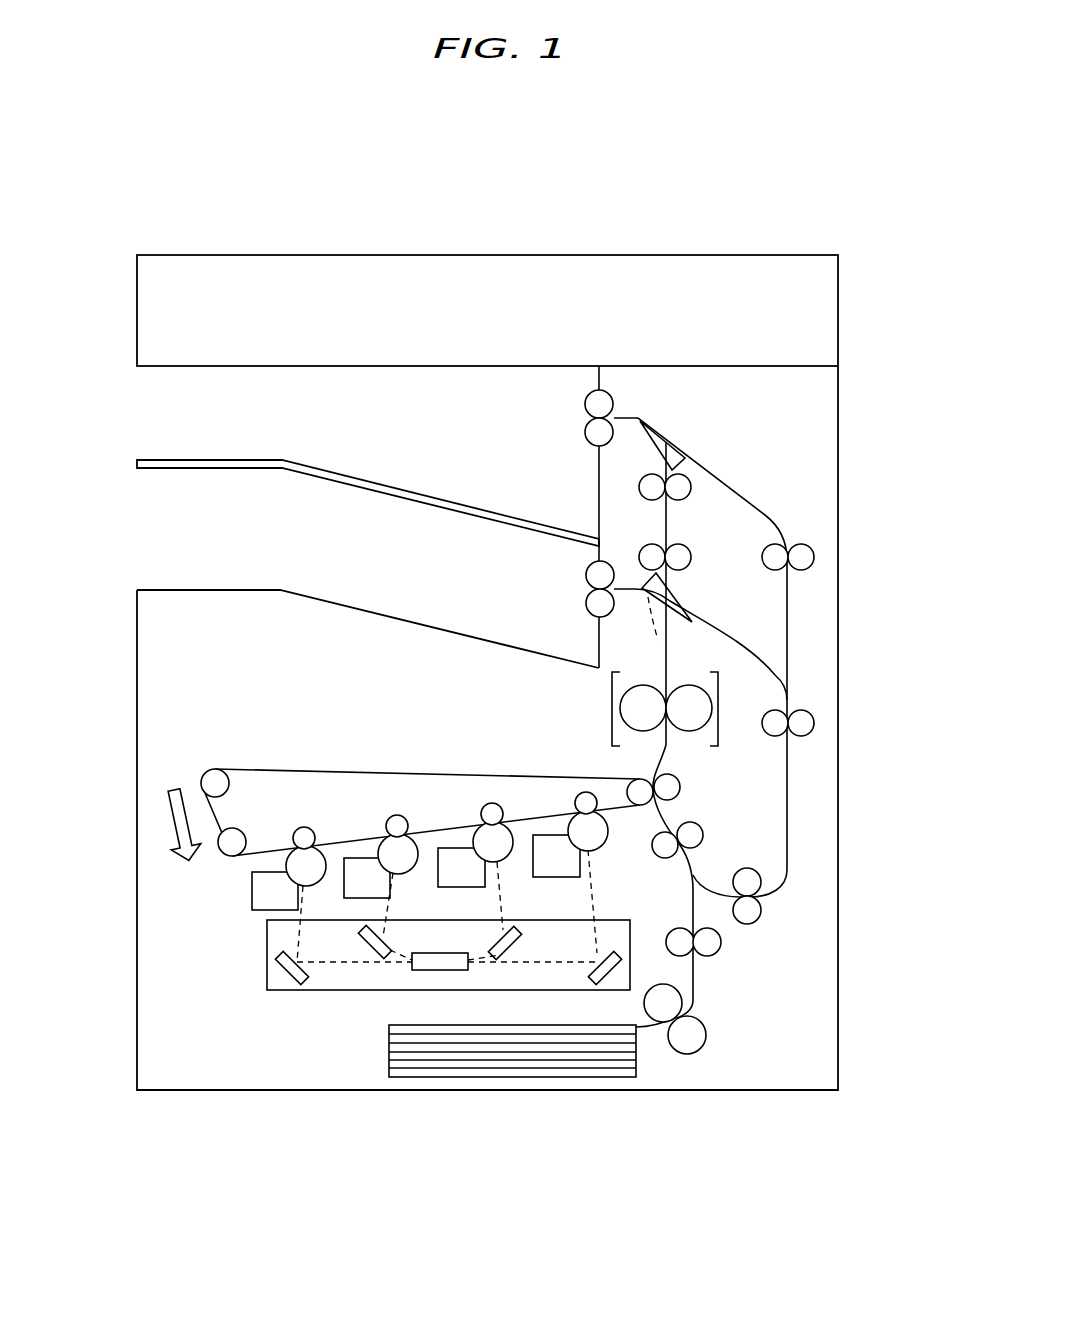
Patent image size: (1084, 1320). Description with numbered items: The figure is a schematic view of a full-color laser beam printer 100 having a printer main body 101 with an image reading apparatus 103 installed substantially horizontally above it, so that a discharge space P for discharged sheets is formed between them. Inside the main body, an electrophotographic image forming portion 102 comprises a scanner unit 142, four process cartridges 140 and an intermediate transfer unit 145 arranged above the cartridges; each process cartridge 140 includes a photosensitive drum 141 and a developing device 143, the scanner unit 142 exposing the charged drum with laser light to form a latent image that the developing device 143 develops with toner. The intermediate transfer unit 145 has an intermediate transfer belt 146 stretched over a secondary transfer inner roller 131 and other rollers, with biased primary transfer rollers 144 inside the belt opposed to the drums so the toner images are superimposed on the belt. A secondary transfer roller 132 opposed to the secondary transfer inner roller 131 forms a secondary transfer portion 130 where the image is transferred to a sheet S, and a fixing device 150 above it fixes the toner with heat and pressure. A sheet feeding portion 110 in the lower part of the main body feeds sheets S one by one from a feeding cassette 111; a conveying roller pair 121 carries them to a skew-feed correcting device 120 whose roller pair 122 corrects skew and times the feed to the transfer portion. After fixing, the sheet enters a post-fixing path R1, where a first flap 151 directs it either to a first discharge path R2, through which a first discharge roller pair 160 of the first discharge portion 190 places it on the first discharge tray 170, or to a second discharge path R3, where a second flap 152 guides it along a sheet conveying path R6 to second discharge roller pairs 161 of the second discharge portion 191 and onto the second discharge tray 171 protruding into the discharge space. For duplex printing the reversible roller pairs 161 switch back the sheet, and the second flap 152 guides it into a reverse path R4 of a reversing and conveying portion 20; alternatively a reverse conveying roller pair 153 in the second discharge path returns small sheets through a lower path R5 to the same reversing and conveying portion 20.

The printer 100 is at (484, 230).
The image reading apparatus 103 is at (840, 320).
The printer main body 101 is at (840, 518).
The reversing and conveying portion 20 is at (845, 478).
The discharge space P is at (135, 401).
The second discharge tray 171 is at (180, 460).
The first discharge tray 170 is at (215, 590).
The post-fixing path R1 is at (666, 652).
The first discharge path R2 is at (627, 585).
The second discharge path R3 is at (668, 524).
The reverse path R4 is at (801, 489).
The path R5 is at (745, 645).
The sheet conveying path R6 is at (626, 412).
The second flap 152 is at (685, 448).
The first flap 151 is at (698, 614).
The second discharge roller pair 161 is at (606, 390).
The second discharge portion 191 is at (574, 441).
The first discharge roller pair 160 is at (584, 577).
The first discharge portion 190 is at (570, 618).
The conveying roller pair 153 is at (690, 562).
The fixing device 150 is at (607, 688).
The intermediate transfer unit 145 is at (369, 758).
The intermediate transfer belt 146 is at (296, 772).
The secondary transfer inner roller 131 is at (625, 806).
The image forming portion 102 is at (184, 770).
The developing device 143 is at (250, 892).
The process cartridge 140 is at (323, 838).
The primary transfer roller 144 is at (290, 828).
The photosensitive drum 141 is at (288, 846).
The scanner unit 142 is at (332, 990).
The secondary transfer roller 132 is at (690, 786).
The secondary transfer portion 130 is at (697, 762).
The roller pair 122 is at (705, 832).
The skew-feed correcting device 120 is at (723, 850).
The conveying roller pair 121 is at (712, 942).
The sheet feeding portion 110 is at (716, 1008).
The feeding cassette 111 is at (445, 1078).
The sheet S is at (522, 1040).